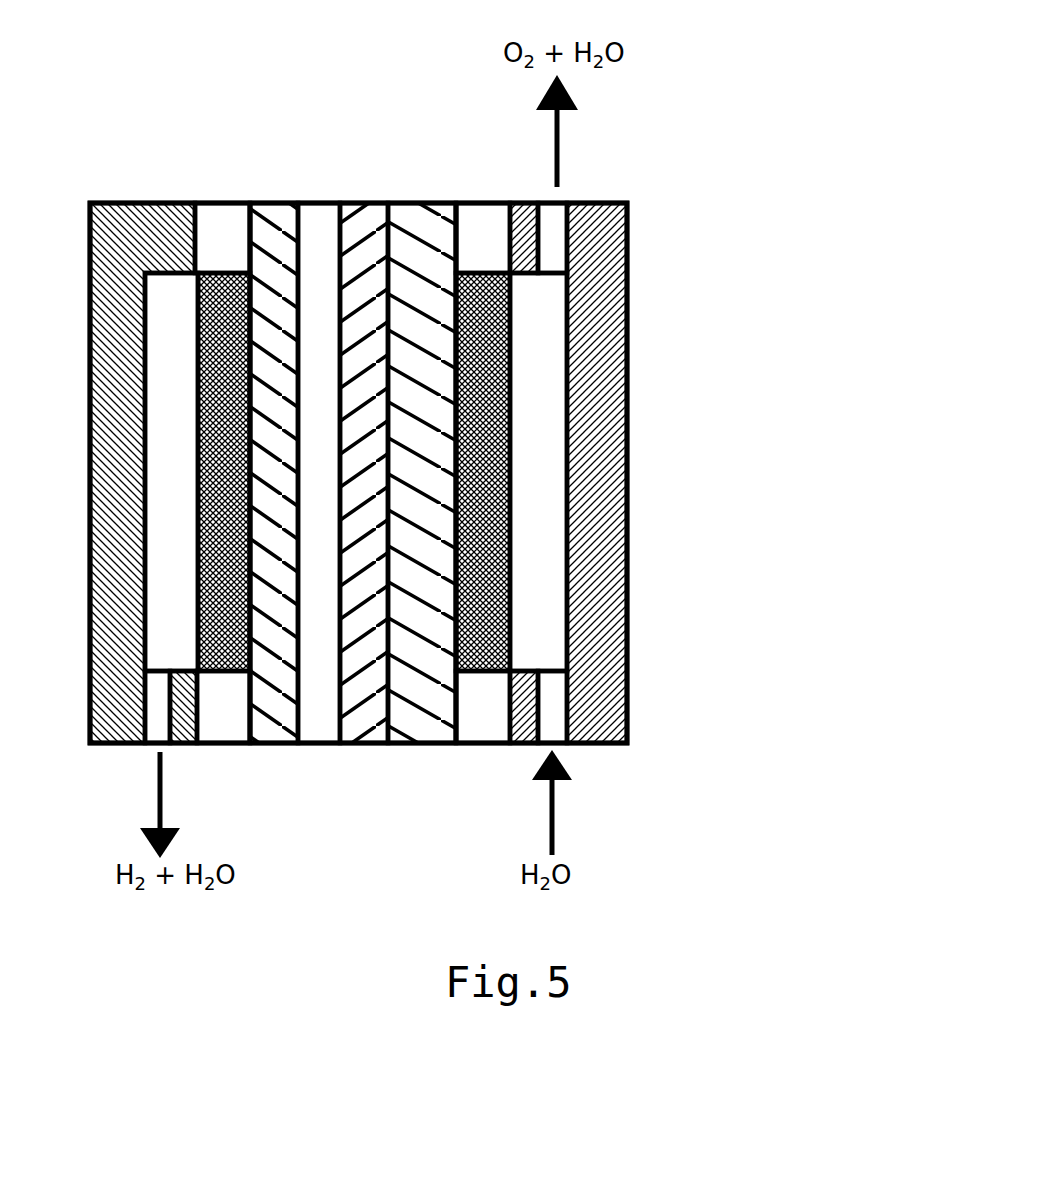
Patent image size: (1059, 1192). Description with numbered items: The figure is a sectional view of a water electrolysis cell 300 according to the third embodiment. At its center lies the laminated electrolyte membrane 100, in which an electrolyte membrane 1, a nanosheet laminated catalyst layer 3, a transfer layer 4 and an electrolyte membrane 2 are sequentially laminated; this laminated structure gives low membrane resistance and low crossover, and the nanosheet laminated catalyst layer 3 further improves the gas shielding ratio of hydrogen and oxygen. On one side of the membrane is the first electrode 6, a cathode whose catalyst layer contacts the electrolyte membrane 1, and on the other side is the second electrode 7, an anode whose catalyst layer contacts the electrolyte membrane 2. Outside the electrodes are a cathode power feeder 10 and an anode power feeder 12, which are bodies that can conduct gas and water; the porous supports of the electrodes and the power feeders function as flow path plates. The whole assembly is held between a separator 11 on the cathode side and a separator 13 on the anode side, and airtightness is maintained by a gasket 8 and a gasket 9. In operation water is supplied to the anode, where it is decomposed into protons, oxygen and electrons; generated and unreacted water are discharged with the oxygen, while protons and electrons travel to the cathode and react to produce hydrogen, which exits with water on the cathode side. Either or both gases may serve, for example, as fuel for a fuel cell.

The laminated electrolyte membrane 100 is at (268, 93).
The electrolyte membrane 1 is at (281, 225).
The electrolyte membrane 2 is at (413, 227).
The nanosheet laminated catalyst layer 3 is at (316, 225).
The transfer layer 4 is at (356, 225).
The first electrode 6 is at (225, 673).
The second electrode 7 is at (485, 640).
The gasket 8 is at (216, 745).
The gasket 9 is at (472, 713).
The cathode power feeder 10 is at (165, 308).
The separator 11 is at (118, 268).
The anode power feeder 12 is at (532, 312).
The separator 13 is at (603, 282).
The water electrolysis cell 300 is at (758, 258).